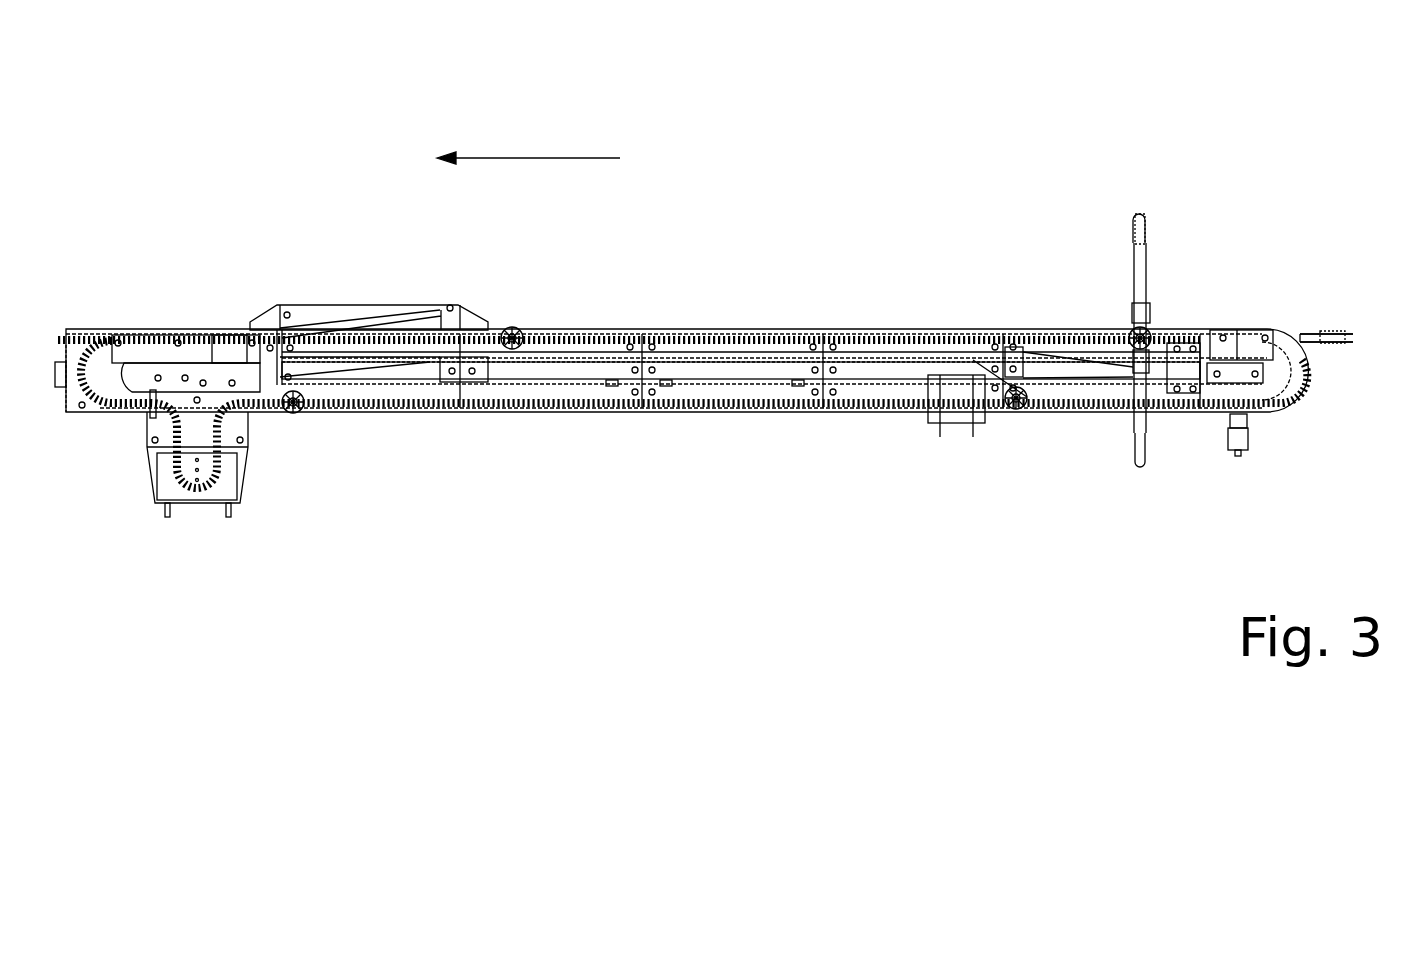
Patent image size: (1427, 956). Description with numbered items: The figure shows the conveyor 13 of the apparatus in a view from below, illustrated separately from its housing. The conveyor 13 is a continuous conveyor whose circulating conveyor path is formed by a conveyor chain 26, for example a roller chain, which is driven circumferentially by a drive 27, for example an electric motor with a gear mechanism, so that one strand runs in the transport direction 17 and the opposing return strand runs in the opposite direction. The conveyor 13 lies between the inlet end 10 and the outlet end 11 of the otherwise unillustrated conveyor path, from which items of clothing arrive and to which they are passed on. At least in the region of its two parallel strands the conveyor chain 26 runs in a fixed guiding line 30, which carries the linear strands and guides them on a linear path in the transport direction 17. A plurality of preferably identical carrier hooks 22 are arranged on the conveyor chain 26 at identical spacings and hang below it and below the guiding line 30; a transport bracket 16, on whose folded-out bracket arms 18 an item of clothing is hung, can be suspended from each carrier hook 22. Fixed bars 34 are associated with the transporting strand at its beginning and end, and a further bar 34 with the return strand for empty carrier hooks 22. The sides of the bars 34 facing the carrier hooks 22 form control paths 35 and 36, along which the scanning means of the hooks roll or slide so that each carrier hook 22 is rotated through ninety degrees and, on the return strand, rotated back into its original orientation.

The inlet end 10 is at (1338, 321).
The outlet end 11 is at (266, 458).
The conveyor 13 is at (818, 306).
The transport bracket 16 is at (1152, 312).
The transport direction 17 is at (524, 158).
The bracket arm 18 is at (1146, 258).
The carrier hook 22 is at (525, 336).
The conveyor chain 26 is at (742, 340).
The drive 27 is at (172, 472).
The guiding line 30 is at (946, 330).
The bar 34 is at (303, 313).
The control path 35 is at (388, 318).
The control path 36 is at (442, 320).